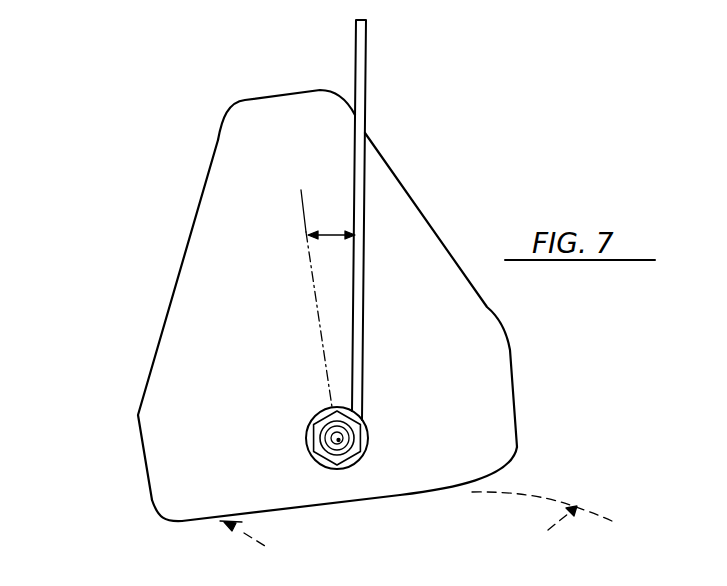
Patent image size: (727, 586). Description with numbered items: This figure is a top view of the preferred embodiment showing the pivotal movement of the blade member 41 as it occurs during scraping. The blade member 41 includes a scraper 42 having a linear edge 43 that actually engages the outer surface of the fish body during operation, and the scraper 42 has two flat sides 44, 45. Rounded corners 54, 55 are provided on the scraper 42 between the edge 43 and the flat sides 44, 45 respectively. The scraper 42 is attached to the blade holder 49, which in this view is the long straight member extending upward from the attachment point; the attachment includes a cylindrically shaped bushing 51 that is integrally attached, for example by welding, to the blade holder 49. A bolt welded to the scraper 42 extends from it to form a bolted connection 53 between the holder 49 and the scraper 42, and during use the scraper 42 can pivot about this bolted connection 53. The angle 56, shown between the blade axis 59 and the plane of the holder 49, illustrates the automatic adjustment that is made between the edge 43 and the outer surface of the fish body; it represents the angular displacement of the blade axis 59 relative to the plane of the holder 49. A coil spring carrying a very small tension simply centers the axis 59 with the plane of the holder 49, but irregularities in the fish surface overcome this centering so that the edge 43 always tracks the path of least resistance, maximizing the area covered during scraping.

The blade member 41 is at (182, 181).
The scraper 42 is at (249, 311).
The linear edge 43 is at (333, 504).
The side 44 is at (148, 360).
The side 45 is at (487, 307).
The blade holder 49 is at (365, 70).
The bushing 51 is at (368, 442).
The bolted connection 53 is at (322, 426).
The rounded corner 54 is at (150, 505).
The rounded corner 55 is at (517, 455).
The angle 56 is at (330, 236).
The blade axis 59 is at (307, 247).